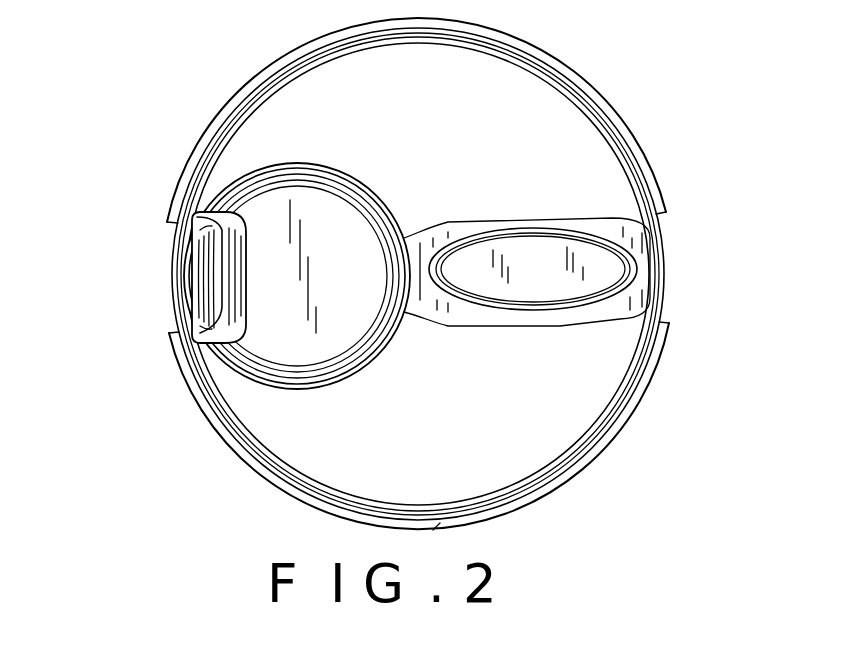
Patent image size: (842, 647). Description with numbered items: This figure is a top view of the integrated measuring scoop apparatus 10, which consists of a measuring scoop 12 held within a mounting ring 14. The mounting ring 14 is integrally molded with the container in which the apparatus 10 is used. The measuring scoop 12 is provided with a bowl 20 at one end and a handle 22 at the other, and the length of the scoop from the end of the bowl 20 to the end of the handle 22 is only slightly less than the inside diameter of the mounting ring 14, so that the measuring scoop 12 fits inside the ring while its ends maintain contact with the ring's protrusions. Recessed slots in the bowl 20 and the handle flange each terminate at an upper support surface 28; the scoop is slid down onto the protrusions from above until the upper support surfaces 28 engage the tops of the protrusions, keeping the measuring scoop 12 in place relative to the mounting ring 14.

The integrated measuring scoop apparatus 10 is at (362, 267).
The mounting ring 14 is at (289, 62).
The bowl 20 is at (419, 252).
The upper support surface 28 is at (200, 272).
The handle 22 is at (562, 272).
The measuring scoop 12 is at (574, 303).